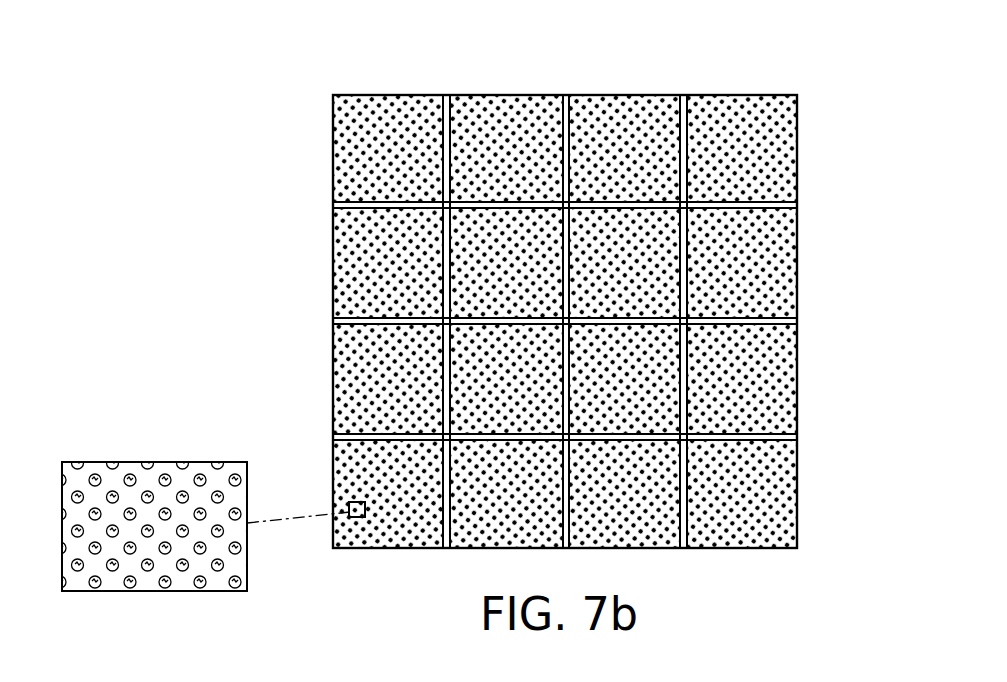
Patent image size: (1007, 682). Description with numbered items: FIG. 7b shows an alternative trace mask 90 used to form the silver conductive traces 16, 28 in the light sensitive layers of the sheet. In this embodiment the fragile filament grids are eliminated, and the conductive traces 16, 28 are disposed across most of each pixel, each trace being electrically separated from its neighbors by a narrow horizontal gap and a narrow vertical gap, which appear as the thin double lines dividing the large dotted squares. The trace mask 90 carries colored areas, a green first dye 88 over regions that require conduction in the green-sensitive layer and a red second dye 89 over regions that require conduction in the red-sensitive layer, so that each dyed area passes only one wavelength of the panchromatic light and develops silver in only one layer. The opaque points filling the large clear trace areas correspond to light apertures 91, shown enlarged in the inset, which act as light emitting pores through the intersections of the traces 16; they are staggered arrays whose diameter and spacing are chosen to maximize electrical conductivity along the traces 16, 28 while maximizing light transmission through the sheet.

The conductive trace 16 is at (494, 281).
The conductive trace 28 is at (498, 84).
The green first dye 88 is at (447, 100).
The red second dye 89 is at (337, 203).
The trace mask 90 is at (540, 276).
The light apertures 91 is at (167, 475).